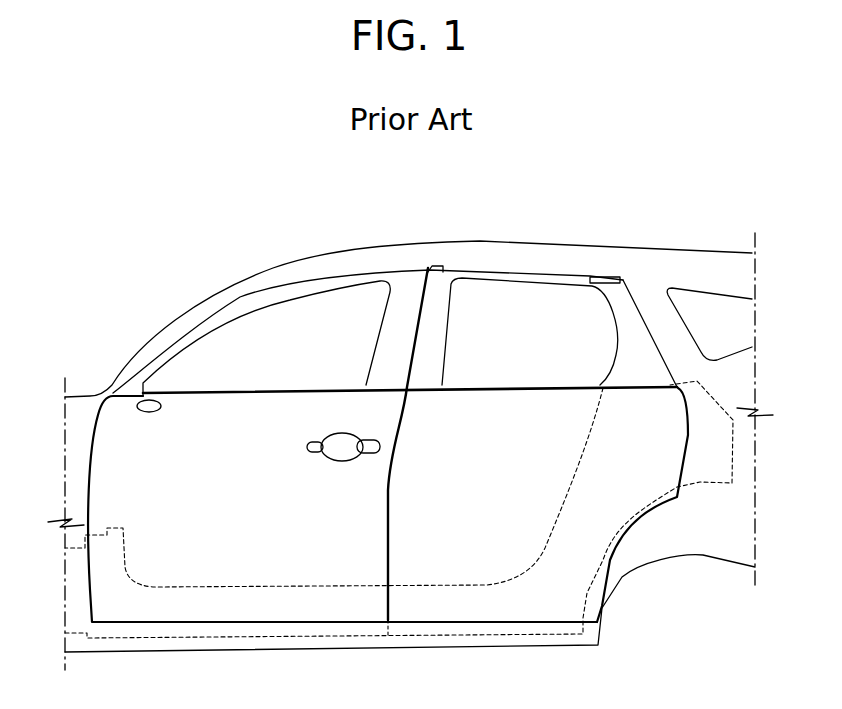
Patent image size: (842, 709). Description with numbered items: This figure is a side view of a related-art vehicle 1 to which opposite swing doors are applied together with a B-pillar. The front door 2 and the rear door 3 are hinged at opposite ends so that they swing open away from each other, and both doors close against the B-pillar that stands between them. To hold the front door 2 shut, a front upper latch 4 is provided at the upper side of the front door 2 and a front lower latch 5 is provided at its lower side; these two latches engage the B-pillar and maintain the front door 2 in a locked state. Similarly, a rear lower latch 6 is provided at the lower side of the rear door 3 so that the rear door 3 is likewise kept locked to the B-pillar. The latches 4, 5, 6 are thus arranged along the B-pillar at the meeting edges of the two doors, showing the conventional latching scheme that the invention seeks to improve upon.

The vehicle body 1 is at (530, 247).
The front door 2 is at (228, 422).
The rear door 3 is at (508, 432).
The front upper latch 4 is at (412, 295).
The front lower latch 5 is at (372, 612).
The rear lower latch 6 is at (410, 612).